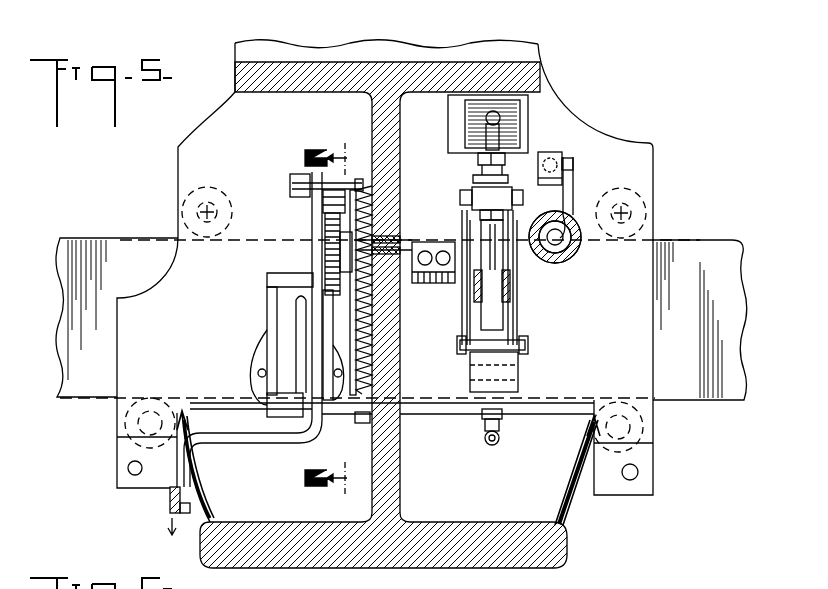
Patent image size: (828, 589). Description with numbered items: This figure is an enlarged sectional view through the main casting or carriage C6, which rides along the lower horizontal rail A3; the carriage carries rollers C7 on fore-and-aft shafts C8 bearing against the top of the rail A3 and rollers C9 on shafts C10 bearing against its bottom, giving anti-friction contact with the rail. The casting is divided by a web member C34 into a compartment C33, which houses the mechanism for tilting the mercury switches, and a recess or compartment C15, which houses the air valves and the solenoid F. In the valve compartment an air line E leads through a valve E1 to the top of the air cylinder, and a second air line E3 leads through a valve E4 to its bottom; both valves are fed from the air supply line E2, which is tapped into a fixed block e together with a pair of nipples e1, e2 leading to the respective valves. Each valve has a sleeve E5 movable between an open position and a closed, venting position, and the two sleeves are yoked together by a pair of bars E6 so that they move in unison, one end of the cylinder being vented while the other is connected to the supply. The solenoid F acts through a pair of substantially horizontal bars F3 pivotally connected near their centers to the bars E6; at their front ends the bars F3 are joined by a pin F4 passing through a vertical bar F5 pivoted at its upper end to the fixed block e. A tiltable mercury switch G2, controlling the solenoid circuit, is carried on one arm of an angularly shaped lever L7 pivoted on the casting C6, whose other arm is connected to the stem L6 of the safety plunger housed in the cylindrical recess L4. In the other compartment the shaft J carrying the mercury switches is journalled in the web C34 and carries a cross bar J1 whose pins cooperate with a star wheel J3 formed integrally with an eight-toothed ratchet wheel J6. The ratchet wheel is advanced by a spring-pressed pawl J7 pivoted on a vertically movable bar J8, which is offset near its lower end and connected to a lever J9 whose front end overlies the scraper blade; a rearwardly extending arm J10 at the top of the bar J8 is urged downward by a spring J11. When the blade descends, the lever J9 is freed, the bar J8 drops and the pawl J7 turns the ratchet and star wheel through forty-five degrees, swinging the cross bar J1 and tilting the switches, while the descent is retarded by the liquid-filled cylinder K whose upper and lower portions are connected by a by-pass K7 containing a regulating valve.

The horizontal cross member or rail A3 is at (705, 262).
The casting or carriage C6 is at (652, 178).
The roller C7 is at (213, 166).
The horizontal fore-and-aft shaft C8 is at (156, 211).
The roller C9 is at (86, 413).
The horizontal fore-and-aft shaft C10 is at (92, 438).
The recess or compartment C15 is at (415, 105).
The compartment C33 is at (330, 105).
The web member C34 is at (385, 498).
The air line E is at (505, 112).
The valve E1 is at (502, 172).
The air supply line E2 is at (512, 298).
The air line E3 is at (498, 440).
The valve E4 is at (522, 407).
The sleeve E5 is at (484, 193).
The bars E6 is at (466, 314).
The solenoid F is at (518, 113).
The substantially horizontal bars F3 is at (465, 343).
The pin F4 is at (462, 353).
The vertical bar F5 is at (508, 322).
The tiltable mercury switch G2 is at (550, 158).
The shaft J is at (400, 258).
The cross bar J1 is at (352, 192).
The cam member or star wheel J3 is at (325, 265).
The ratchet wheel J6 is at (325, 223).
The spring-pressed pawl J7 is at (322, 199).
The bar J8 is at (236, 452).
The lever J9 is at (169, 505).
The rearwardly extending arm J10 is at (300, 178).
The spring J11 is at (354, 414).
The cylinder K is at (270, 318).
The by-pass K7 is at (301, 332).
The cylindrical recess L4 is at (582, 246).
The stem L6 is at (573, 197).
The angularly-shaped lever L7 is at (572, 201).
The fixed block e is at (500, 291).
The nipple e1 is at (488, 235).
The nipple e2 is at (480, 333).